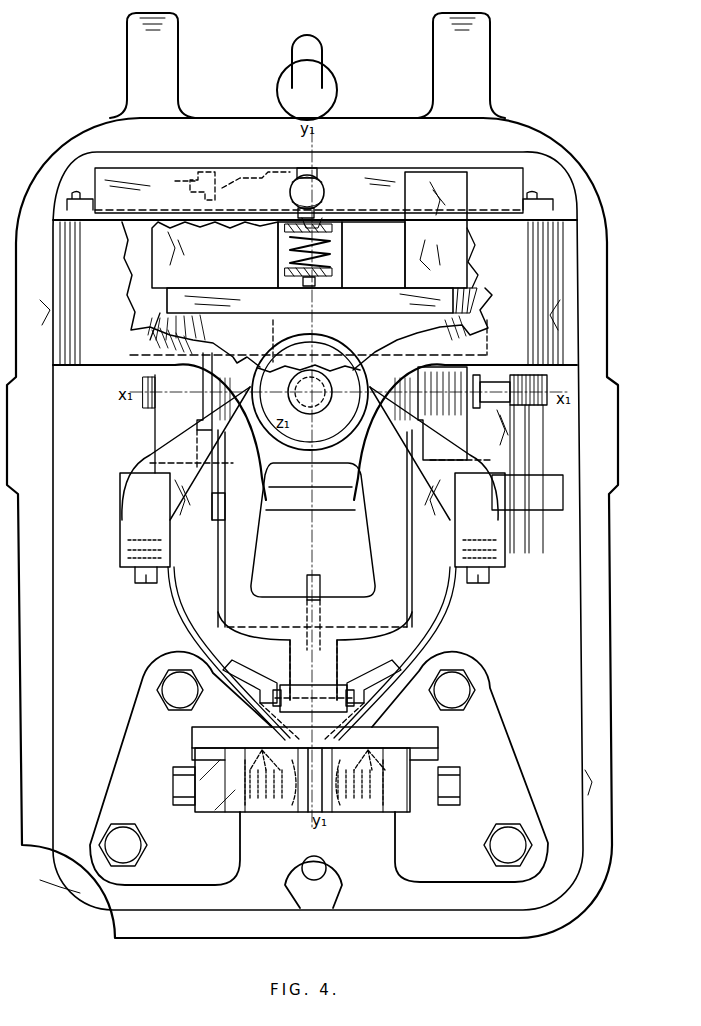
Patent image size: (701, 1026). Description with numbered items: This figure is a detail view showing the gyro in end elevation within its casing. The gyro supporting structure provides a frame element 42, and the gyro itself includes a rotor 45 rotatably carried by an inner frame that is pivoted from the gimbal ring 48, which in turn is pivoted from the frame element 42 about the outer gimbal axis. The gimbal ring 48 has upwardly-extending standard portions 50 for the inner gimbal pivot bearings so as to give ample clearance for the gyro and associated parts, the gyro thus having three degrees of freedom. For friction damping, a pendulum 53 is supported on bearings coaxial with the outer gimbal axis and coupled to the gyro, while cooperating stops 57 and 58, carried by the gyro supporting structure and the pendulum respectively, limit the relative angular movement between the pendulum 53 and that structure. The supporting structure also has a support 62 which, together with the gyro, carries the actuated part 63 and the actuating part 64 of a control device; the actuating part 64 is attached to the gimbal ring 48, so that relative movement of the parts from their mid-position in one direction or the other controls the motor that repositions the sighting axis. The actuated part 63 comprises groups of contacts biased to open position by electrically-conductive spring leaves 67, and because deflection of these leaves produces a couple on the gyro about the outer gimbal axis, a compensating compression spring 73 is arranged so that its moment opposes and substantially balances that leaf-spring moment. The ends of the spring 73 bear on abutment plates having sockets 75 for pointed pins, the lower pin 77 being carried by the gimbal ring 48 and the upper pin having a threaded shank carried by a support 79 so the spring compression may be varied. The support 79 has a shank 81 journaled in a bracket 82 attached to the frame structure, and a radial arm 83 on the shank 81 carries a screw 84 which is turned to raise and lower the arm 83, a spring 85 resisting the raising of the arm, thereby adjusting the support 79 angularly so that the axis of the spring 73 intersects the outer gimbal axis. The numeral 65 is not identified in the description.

The frame element 42 is at (103, 348).
The rotor 45 is at (414, 230).
The gimbal ring 48 is at (143, 488).
The standard portions 50 is at (163, 420).
The pendulum 53 is at (252, 622).
The stop 57 is at (262, 690).
The stop 58 is at (353, 690).
The support 62 is at (232, 798).
The actuated part 63 is at (266, 806).
The actuating part 64 is at (287, 806).
The leaf spring 65 is at (176, 626).
The spring leaves 67 is at (316, 768).
The compensating spring 73 is at (332, 241).
The sockets 75 is at (290, 279).
The pointed pin 77 is at (318, 285).
The support 79 is at (290, 194).
The shank 81 is at (326, 198).
The bracket 82 is at (374, 190).
The radial arm 83 is at (236, 228).
The screw 84 is at (182, 186).
The spring 85 is at (268, 170).